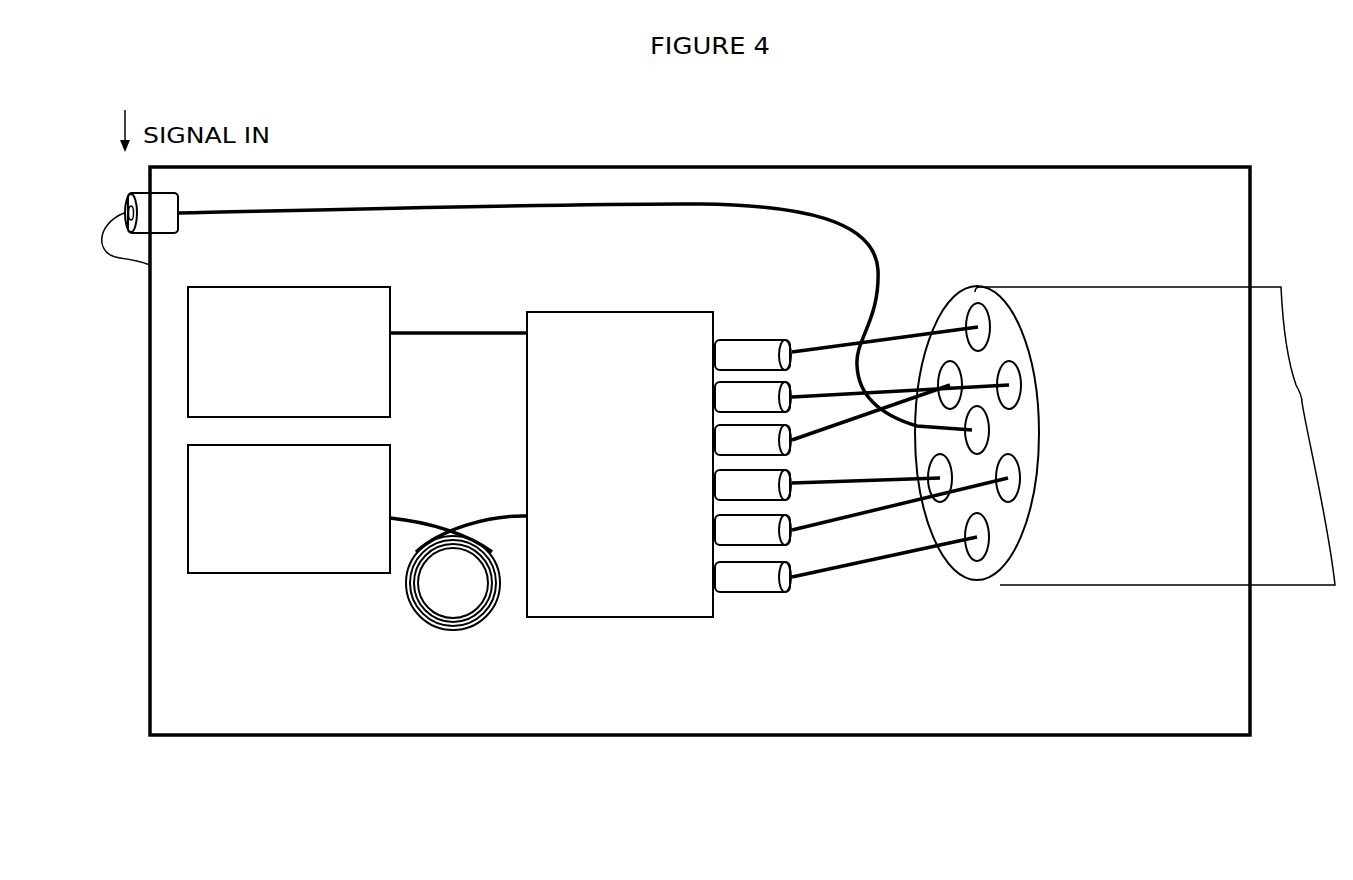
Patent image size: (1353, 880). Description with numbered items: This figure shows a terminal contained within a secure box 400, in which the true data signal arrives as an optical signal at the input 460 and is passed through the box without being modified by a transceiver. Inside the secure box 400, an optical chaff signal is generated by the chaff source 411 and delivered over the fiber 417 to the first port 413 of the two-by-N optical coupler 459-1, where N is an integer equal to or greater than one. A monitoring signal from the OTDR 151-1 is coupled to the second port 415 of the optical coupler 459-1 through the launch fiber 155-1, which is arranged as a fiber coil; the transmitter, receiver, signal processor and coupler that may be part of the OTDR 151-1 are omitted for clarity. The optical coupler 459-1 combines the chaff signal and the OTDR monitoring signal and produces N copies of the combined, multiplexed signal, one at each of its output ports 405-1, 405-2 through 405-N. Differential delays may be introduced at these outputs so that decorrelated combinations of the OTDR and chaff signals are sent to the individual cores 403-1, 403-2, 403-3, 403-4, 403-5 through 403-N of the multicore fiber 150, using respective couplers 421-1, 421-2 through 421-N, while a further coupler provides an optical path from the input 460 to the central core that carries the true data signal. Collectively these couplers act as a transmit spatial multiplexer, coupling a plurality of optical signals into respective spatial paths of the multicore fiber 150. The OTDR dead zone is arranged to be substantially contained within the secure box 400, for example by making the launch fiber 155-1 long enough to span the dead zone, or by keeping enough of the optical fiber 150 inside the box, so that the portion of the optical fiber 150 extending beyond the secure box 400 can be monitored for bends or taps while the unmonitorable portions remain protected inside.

The secure box 400 is at (1040, 160).
The input 460 is at (156, 237).
The chaff source 411 is at (346, 283).
The fiber 417 is at (497, 322).
The first port 413 is at (531, 333).
The 2:N optical coupler 459-1 is at (656, 378).
The OTDR 151-1 is at (390, 445).
The second port 415 is at (530, 518).
The launch fiber 155-1 is at (490, 613).
The output port 405-1 is at (753, 355).
The output port 405-2 is at (753, 397).
The output port 405-N is at (757, 580).
The coupler 421-1 is at (837, 340).
The coupler 421-2 is at (822, 390).
The coupler 421-N is at (832, 578).
The core 403-1 is at (990, 322).
The core 403-2 is at (960, 372).
The core 403-3 is at (1067, 385).
The core 403-4 is at (950, 480).
The core 403-5 is at (1016, 492).
The core 403-N is at (985, 542).
The multicore fiber 150 is at (1303, 392).